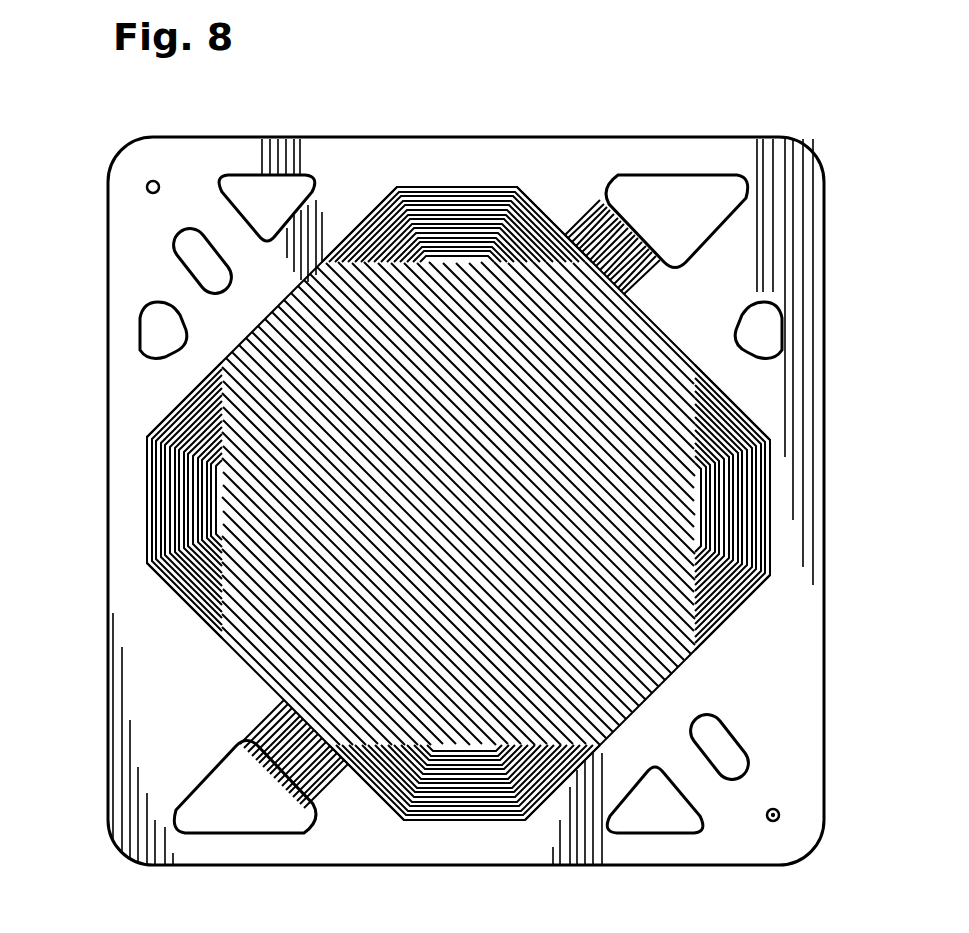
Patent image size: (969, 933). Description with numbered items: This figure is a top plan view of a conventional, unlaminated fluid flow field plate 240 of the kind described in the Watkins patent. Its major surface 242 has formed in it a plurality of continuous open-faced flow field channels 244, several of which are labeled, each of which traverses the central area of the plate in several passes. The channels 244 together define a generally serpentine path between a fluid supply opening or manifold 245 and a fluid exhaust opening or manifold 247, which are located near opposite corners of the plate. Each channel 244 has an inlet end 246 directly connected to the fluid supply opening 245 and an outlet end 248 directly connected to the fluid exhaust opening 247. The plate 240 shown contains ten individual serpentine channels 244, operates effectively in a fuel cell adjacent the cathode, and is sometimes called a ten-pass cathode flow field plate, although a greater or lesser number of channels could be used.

The fluid flow field plate 240 is at (101, 561).
The major surface 242 is at (812, 627).
The flow field channels 244 is at (735, 431).
The fluid supply opening 245 is at (267, 802).
The inlet end 246 is at (290, 745).
The fluid exhaust opening 247 is at (720, 222).
The outlet end 248 is at (600, 209).